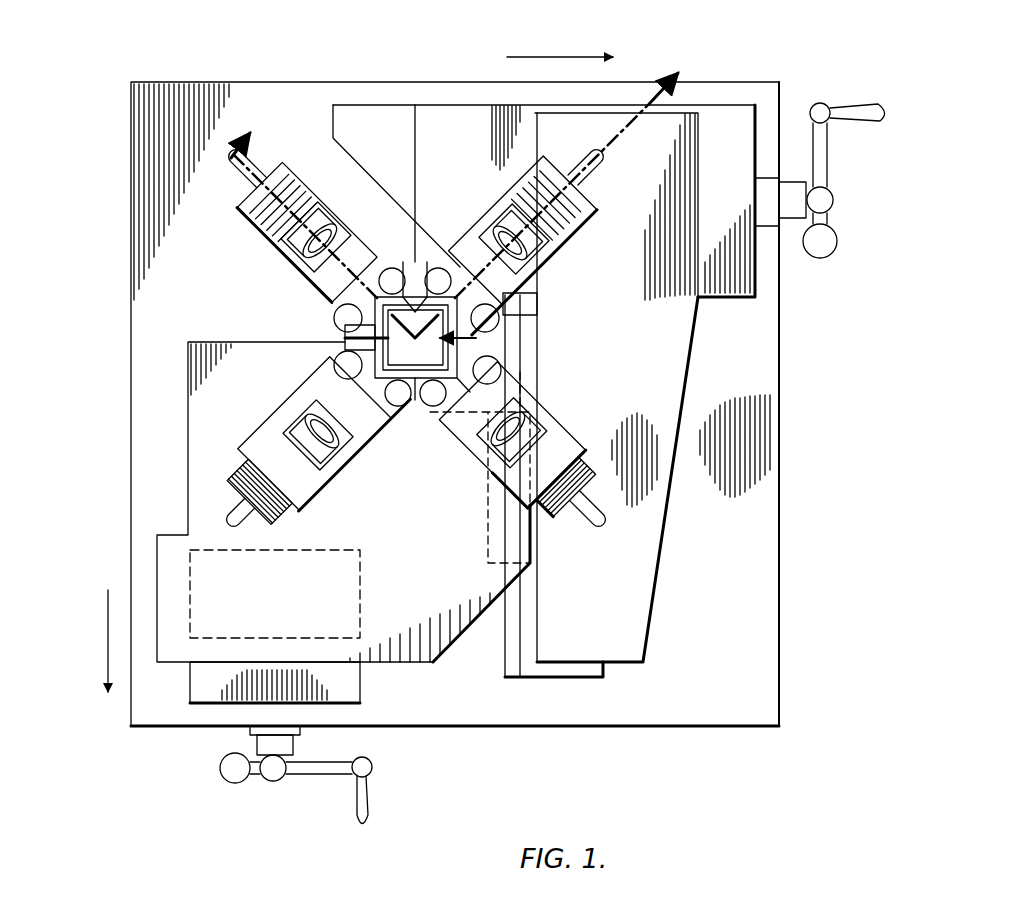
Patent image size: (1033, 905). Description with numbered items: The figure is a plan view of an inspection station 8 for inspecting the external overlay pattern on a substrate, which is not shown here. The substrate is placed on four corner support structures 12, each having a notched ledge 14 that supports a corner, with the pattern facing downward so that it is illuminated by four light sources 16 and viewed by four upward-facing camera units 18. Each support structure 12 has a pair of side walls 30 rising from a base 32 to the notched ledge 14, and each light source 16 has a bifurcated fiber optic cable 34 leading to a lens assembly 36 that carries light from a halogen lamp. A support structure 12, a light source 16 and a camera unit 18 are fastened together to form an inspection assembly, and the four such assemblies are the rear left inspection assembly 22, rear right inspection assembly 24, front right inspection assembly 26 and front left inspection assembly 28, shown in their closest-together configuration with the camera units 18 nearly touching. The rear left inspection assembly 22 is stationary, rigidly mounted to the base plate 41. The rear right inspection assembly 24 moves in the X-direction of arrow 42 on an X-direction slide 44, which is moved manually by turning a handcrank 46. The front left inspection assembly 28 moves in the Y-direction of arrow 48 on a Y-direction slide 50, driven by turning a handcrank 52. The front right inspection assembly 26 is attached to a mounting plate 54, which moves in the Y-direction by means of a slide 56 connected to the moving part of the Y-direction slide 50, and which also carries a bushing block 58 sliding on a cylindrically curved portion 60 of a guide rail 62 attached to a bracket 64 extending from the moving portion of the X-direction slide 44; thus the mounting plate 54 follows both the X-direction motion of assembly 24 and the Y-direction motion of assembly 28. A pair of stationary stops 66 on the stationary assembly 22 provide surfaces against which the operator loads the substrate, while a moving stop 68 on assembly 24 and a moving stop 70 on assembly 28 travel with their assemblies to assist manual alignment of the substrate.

The inspection station 8 is at (417, 404).
The corner support structure 12 is at (382, 265).
The notched ledge 14 is at (400, 422).
The light source 16 is at (296, 265).
The camera unit 18 is at (458, 385).
The rear left inspection assembly 22 is at (324, 190).
The rear right inspection assembly 24 is at (486, 206).
The front right inspection assembly 26 is at (555, 411).
The front left inspection assembly 28 is at (283, 406).
The side wall 30 is at (519, 303).
The base 32 is at (478, 382).
The bifurcated fiber optic cable 34 is at (238, 502).
The lens assembly 36 is at (346, 478).
The base plate 41 is at (131, 292).
The arrow 42 is at (535, 57).
The X-direction slide 44 is at (478, 104).
The handcrank 46 is at (866, 107).
The arrow 48 is at (106, 656).
The Y-direction slide 50 is at (186, 469).
The handcrank 52 is at (350, 810).
The mounting plate 54 is at (403, 665).
The slide 56 is at (362, 586).
The bushing block 58 is at (487, 496).
The cylindrically curved portion 60 is at (504, 637).
The guide rail 62 is at (553, 678).
The bracket 64 is at (662, 553).
The stationary stop 66 is at (404, 284).
The moving stop 68 is at (430, 284).
The moving stop 70 is at (335, 378).